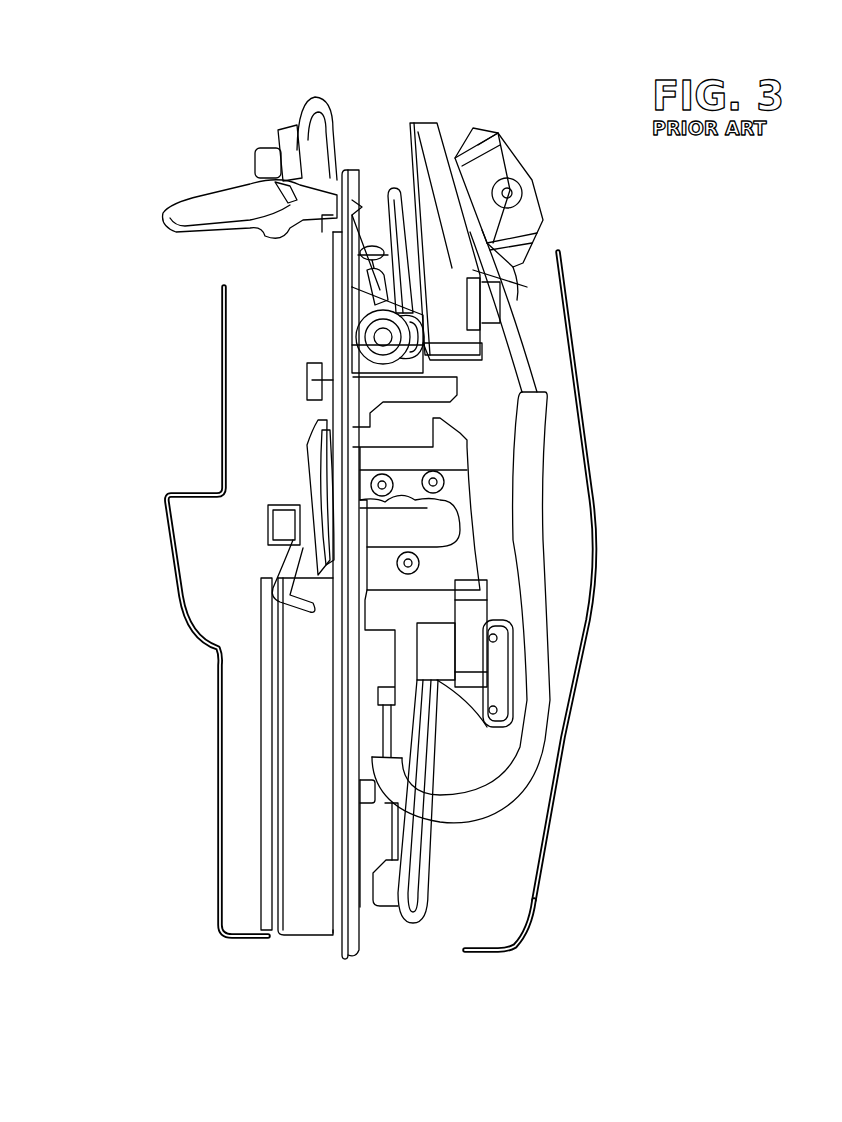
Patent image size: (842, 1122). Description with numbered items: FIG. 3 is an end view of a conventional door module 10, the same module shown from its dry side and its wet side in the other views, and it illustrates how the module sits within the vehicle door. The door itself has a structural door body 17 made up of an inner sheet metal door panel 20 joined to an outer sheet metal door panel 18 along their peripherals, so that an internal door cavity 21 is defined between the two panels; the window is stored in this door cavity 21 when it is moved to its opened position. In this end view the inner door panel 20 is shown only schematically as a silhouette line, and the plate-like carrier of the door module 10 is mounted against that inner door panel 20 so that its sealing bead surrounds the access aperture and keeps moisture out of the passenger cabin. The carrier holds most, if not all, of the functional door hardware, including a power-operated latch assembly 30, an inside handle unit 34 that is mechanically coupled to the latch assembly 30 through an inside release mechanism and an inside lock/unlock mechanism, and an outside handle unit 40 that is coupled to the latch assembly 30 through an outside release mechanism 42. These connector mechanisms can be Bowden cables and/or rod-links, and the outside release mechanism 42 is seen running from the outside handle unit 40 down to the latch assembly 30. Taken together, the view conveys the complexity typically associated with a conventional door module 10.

The door module 10 is at (543, 248).
The structural door body 17 is at (548, 903).
The outer sheet metal door panel 18 is at (560, 772).
The inner sheet metal door panel 20 is at (218, 735).
The internal door cavity 21 is at (442, 903).
The power-operated latch assembly 30 is at (370, 480).
The inside handle unit 34 is at (218, 210).
The outside handle unit 40 is at (527, 208).
The outside release mechanism 42 is at (530, 492).